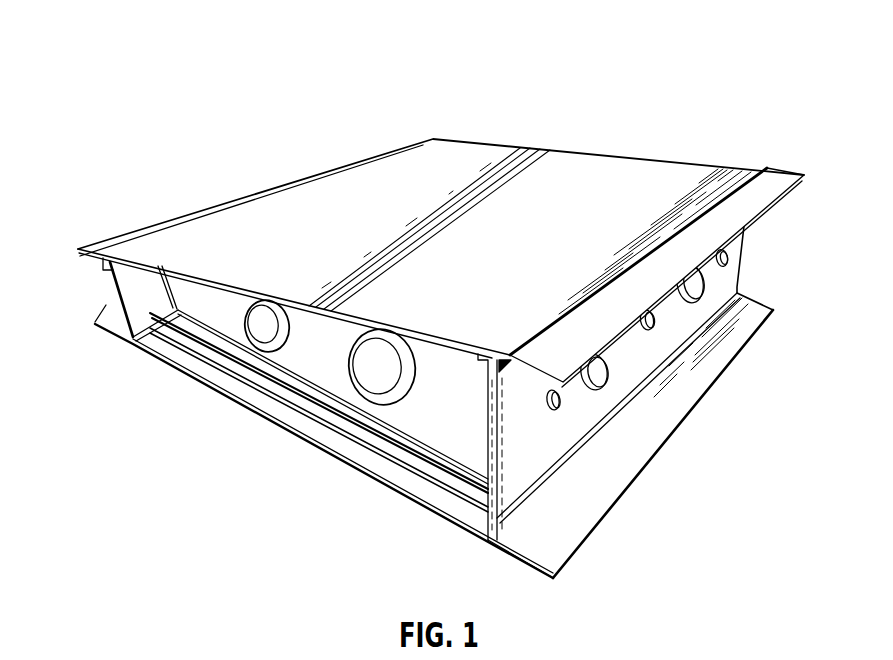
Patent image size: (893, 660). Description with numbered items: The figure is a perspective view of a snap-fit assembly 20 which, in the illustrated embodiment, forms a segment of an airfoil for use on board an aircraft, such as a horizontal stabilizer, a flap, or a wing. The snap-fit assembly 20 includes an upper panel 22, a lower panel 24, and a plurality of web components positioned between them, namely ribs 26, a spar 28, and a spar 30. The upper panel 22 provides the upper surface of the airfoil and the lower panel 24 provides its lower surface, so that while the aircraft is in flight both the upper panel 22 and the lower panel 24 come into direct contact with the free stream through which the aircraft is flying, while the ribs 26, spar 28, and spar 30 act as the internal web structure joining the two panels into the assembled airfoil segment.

The snap-fit assembly 20 is at (105, 74).
The upper panel 22 is at (565, 190).
The lower panel 24 is at (335, 450).
The ribs 26 is at (222, 318).
The spar 28 is at (141, 300).
The spar 30 is at (633, 355).